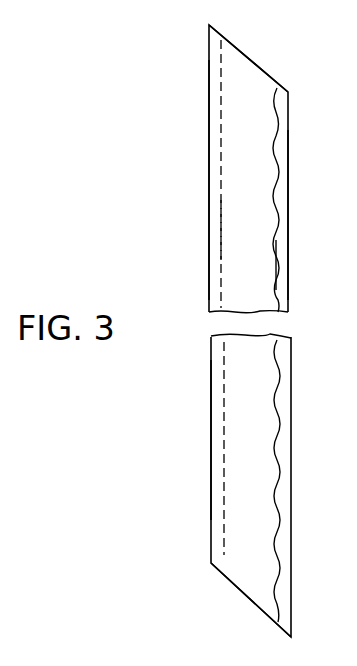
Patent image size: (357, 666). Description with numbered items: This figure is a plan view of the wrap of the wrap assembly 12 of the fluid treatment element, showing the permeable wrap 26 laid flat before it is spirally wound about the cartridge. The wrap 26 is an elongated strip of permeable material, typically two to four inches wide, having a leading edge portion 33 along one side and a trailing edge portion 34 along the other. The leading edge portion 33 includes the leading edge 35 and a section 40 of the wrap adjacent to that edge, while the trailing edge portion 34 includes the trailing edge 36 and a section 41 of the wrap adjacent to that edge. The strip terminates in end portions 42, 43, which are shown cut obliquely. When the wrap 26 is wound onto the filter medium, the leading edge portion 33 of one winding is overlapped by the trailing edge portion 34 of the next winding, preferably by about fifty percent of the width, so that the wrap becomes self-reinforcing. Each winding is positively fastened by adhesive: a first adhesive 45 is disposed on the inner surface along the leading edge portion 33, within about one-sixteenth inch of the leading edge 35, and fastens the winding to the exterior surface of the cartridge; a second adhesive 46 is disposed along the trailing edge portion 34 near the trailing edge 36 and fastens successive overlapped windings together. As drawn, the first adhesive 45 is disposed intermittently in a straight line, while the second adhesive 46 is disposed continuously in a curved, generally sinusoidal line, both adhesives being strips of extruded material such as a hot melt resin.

The wrap assembly 12 is at (186, 196).
The permeable wrap 26 is at (211, 412).
The leading edge portion 33 is at (228, 92).
The trailing edge portion 34 is at (268, 139).
The leading edge 35 is at (210, 118).
The trailing edge 36 is at (288, 168).
The section of the wrap adjacent to the leading edge 40 is at (233, 477).
The section of the wrap adjacent to the trailing edge 41 is at (270, 433).
The end portion 42 is at (250, 82).
The end portion 43 is at (243, 572).
The first adhesive 45 is at (222, 232).
The second adhesive 46 is at (276, 272).